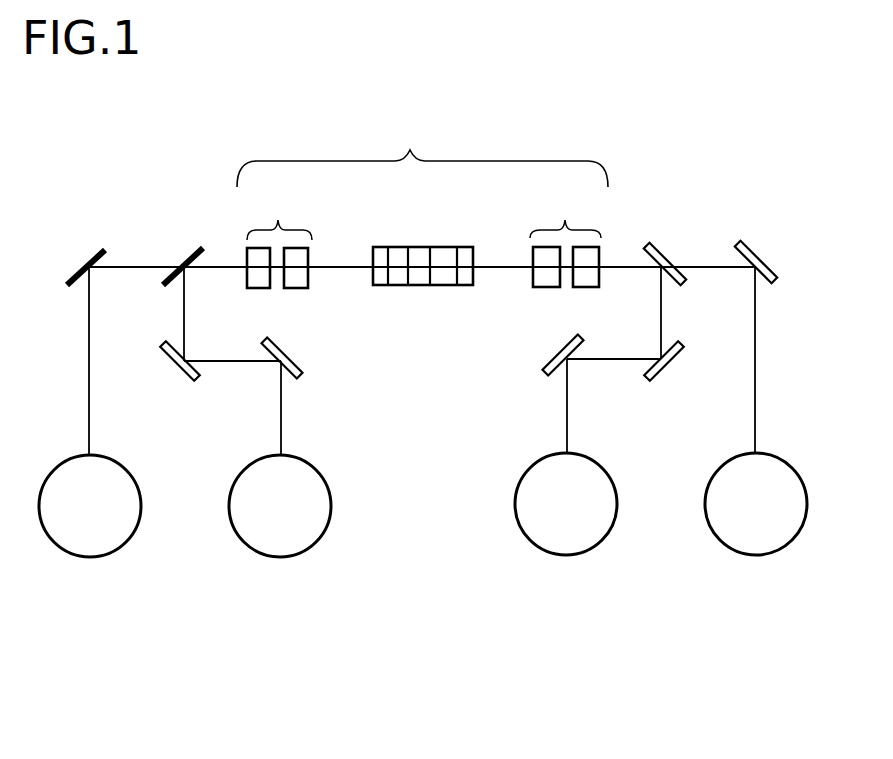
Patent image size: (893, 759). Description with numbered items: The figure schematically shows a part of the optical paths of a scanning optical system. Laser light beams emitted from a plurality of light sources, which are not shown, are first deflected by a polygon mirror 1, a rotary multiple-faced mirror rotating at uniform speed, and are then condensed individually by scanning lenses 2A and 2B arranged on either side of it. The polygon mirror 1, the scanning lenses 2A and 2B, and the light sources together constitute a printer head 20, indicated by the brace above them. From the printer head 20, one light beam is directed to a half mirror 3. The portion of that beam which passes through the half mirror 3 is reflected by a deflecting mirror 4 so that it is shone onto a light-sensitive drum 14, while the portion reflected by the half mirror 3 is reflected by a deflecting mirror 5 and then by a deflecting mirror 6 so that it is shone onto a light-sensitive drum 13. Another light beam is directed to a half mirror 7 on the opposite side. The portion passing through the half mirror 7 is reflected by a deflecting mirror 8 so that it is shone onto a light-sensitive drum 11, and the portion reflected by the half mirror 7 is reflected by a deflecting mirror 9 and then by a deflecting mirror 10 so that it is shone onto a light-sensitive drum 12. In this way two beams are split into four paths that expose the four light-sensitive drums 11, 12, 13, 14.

The polygon mirror 1 is at (412, 240).
The scanning lens 2A is at (565, 232).
The scanning lens 2B is at (279, 233).
The half mirror 3 is at (672, 250).
The deflecting mirror 4 is at (762, 248).
The deflecting mirror 5 is at (670, 367).
The deflecting mirror 6 is at (547, 347).
The half mirror 7 is at (175, 247).
The deflecting mirror 8 is at (79, 248).
The deflecting mirror 9 is at (172, 370).
The deflecting mirror 10 is at (305, 360).
The light-sensitive drum 11 is at (115, 555).
The light-sensitive drum 12 is at (307, 553).
The light-sensitive drum 13 is at (590, 553).
The light-sensitive drum 14 is at (780, 545).
The printer head 20 is at (422, 144).